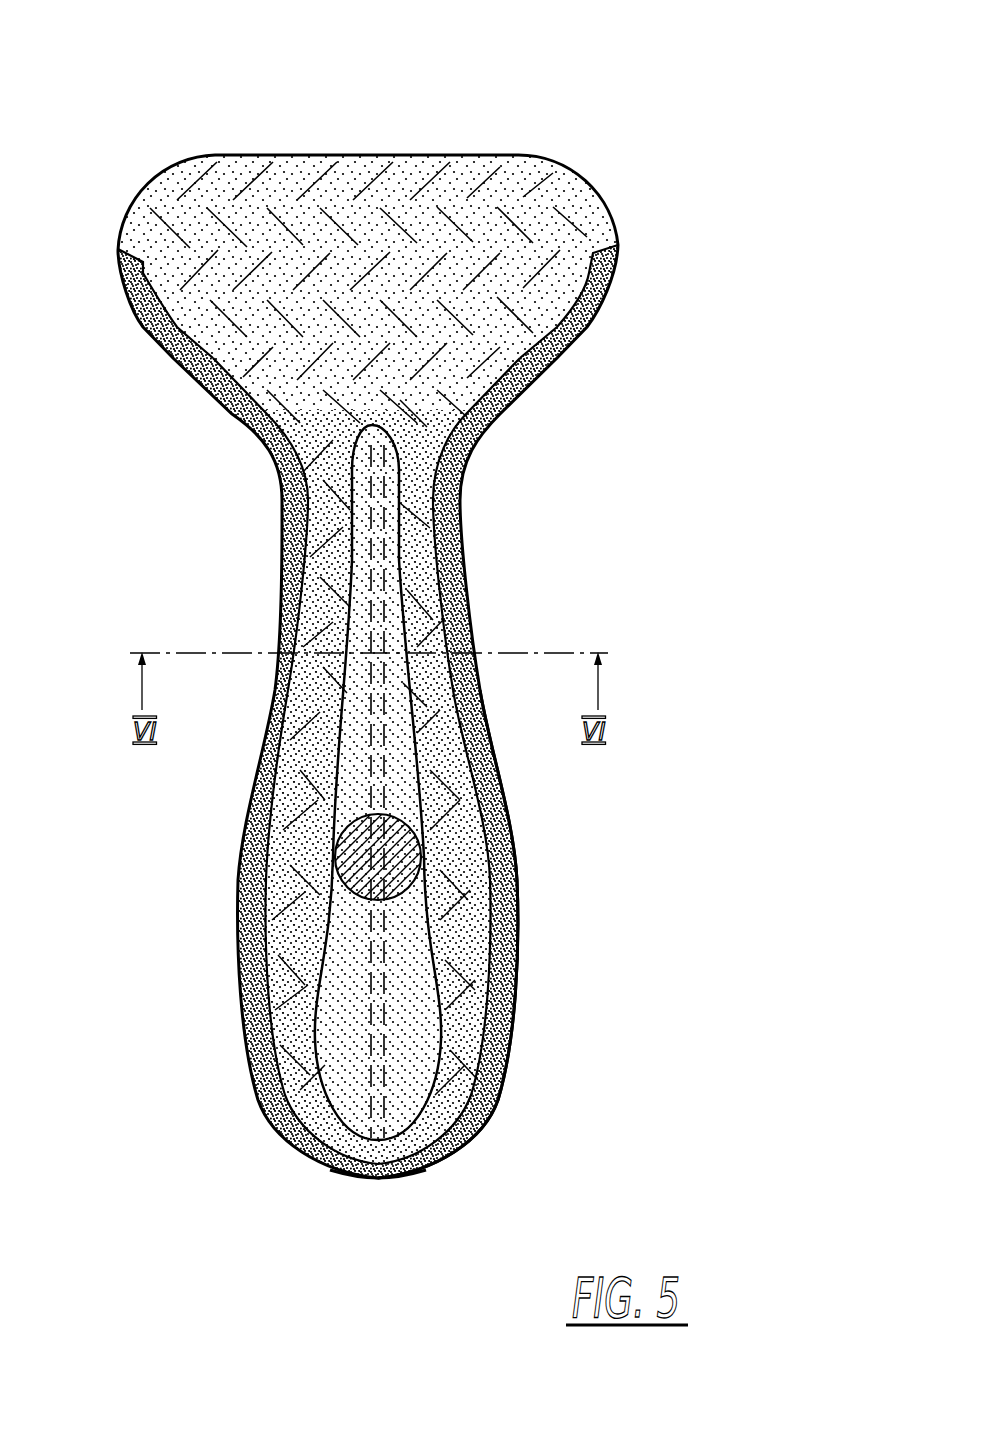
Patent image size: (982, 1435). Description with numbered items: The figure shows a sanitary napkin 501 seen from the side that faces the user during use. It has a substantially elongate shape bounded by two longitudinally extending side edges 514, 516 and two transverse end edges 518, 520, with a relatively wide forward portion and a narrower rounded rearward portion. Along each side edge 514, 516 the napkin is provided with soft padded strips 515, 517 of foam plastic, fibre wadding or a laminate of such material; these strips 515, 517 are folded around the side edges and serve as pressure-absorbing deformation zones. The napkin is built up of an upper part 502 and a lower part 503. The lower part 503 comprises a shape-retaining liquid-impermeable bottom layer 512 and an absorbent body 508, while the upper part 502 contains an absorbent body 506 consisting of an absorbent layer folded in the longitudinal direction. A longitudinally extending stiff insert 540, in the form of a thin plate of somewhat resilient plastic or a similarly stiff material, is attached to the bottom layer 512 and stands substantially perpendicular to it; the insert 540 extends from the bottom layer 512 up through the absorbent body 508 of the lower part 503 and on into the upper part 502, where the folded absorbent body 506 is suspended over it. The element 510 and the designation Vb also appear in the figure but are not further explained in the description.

The sanitary napkin 501 is at (660, 88).
The upper part 502 is at (520, 1000).
The lower part 503 is at (517, 296).
The absorbent body 506 is at (320, 851).
The absorbent body 508 is at (273, 947).
The head shell portion 510 is at (263, 327).
The liquid-impermeable bottom layer 512 is at (547, 205).
The longitudinally extending side edge 514 is at (281, 574).
The padded strip 515 is at (253, 751).
The longitudinally extending side edge 516 is at (468, 548).
The padded strip 517 is at (502, 760).
The transverse end edge 518 is at (425, 153).
The transverse end edge 520 is at (380, 1178).
The stiff insert 540 is at (427, 897).
The vibration direction Vb is at (418, 843).